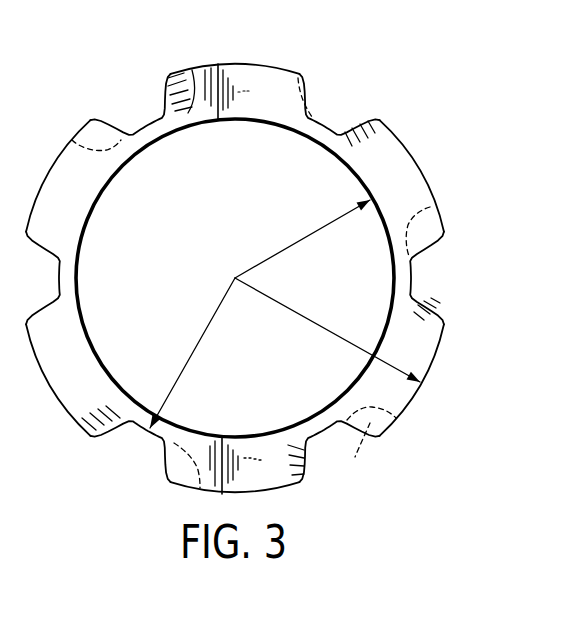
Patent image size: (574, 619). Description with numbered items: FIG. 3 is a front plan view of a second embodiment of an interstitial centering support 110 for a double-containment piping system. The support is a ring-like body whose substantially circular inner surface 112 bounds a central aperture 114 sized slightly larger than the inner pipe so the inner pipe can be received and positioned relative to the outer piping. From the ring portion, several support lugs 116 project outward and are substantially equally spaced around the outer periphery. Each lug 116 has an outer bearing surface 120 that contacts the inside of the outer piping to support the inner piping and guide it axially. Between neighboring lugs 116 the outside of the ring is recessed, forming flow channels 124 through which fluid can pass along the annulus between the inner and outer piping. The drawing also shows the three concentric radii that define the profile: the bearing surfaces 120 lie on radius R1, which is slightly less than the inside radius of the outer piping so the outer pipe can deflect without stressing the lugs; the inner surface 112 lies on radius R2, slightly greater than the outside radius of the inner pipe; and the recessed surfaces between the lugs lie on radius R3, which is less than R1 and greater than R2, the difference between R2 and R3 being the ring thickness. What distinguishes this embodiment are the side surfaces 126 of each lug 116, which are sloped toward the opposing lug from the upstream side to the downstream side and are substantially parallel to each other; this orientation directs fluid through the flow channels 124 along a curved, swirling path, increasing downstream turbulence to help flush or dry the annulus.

The centering support 110 is at (383, 79).
The inner surface 112 is at (258, 434).
The central aperture 114 is at (117, 210).
The support lug 116 is at (243, 77).
The bearing surface 120 is at (221, 63).
The flow channel 124 is at (133, 114).
The side surface 126 is at (439, 231).
The radius R1 is at (313, 322).
The radius R2 is at (305, 246).
The radius R3 is at (215, 313).